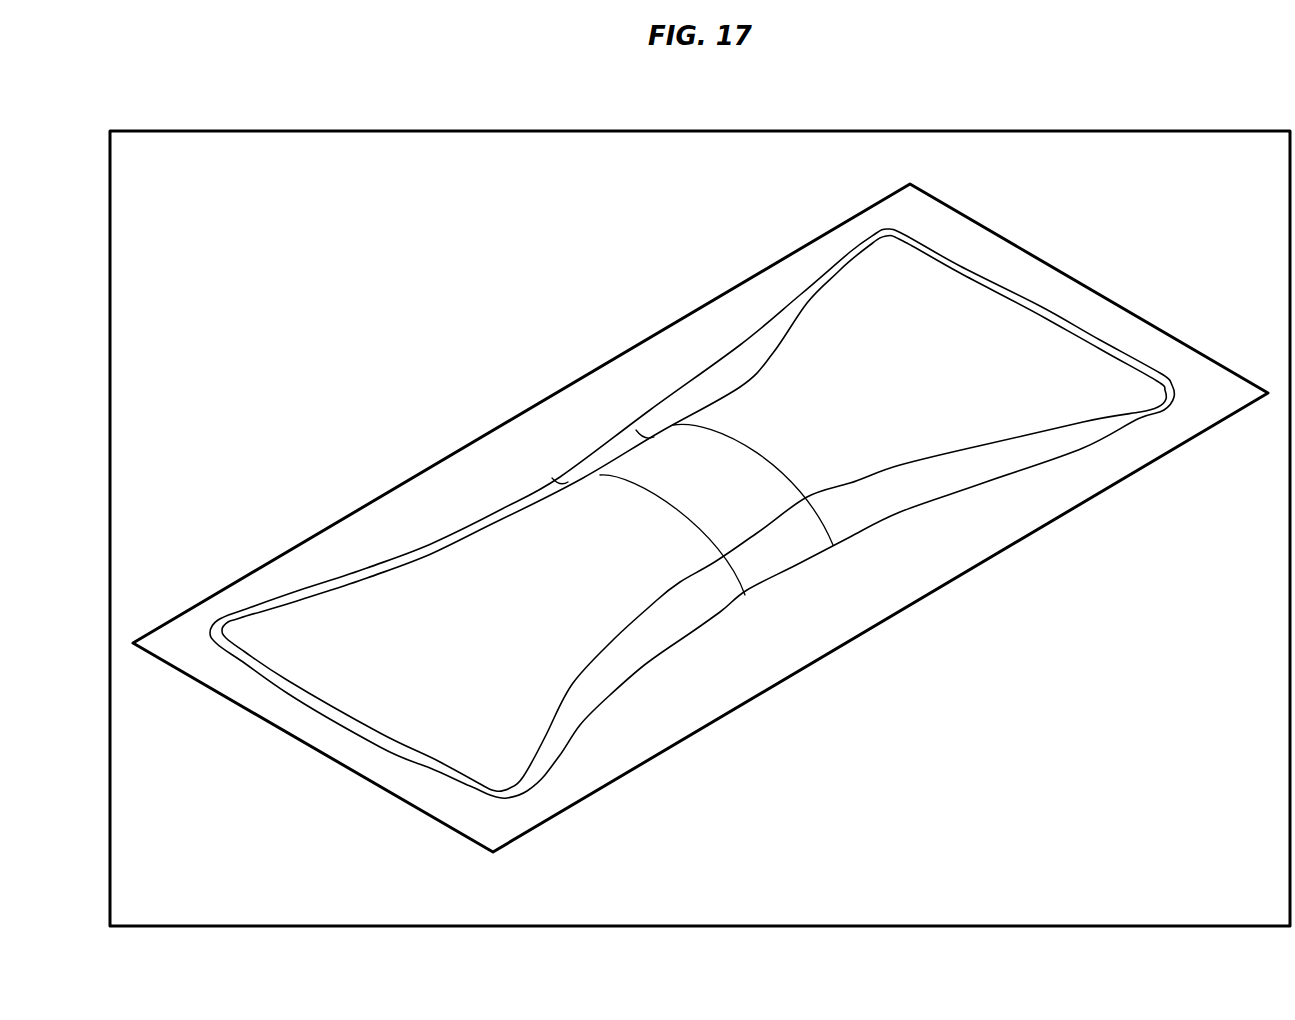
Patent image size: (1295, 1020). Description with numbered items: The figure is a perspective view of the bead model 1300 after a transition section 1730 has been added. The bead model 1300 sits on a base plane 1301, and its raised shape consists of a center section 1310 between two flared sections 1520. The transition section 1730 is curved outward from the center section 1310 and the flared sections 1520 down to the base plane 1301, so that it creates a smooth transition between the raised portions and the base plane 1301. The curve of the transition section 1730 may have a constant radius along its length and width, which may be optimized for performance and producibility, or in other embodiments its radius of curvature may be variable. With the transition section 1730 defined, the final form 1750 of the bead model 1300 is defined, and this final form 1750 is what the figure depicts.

The bead model 1300 is at (245, 131).
The base plane 1301 is at (467, 467).
The final form 1750 is at (566, 353).
The transition section 1730 is at (740, 373).
The center section 1310 is at (737, 508).
The flared sections 1520 is at (985, 412).